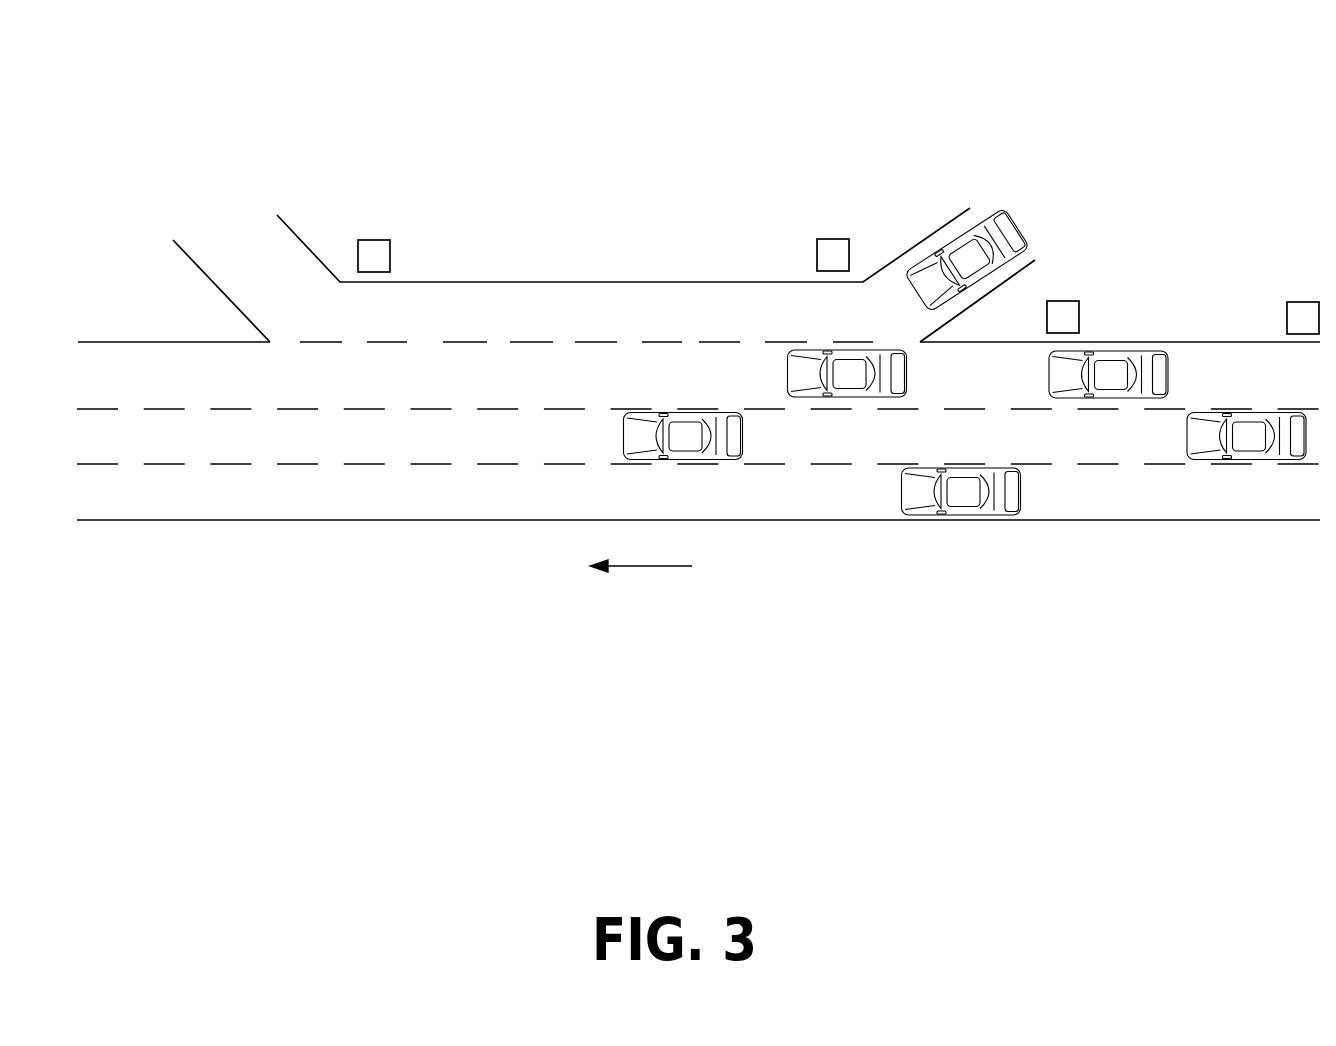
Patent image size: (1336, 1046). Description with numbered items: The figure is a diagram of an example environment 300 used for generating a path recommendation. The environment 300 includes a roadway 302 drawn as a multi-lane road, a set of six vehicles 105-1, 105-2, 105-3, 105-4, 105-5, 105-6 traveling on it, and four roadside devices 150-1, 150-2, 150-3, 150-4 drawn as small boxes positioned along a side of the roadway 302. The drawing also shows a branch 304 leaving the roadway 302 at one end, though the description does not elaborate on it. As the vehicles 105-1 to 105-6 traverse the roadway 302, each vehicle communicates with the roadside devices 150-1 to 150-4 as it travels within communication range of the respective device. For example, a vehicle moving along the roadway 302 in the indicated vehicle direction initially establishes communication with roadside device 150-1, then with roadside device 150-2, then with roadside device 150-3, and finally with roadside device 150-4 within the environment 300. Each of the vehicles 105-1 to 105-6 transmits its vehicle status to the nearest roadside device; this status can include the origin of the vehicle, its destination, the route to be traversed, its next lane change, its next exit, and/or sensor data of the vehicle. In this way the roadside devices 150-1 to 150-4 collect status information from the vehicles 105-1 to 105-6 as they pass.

The environment 300 is at (1155, 100).
The roadway 302 is at (233, 497).
The exit ramp 304 is at (234, 241).
The vehicle 105-1 is at (840, 352).
The vehicle 105-2 is at (965, 252).
The vehicle 105-3 is at (697, 430).
The vehicle 105-4 is at (978, 484).
The vehicle 105-5 is at (1118, 373).
The vehicle 105-6 is at (1252, 447).
The roadside device 150-1 is at (1300, 302).
The roadside device 150-2 is at (1063, 300).
The roadside device 150-3 is at (830, 239).
The roadside device 150-4 is at (372, 240).